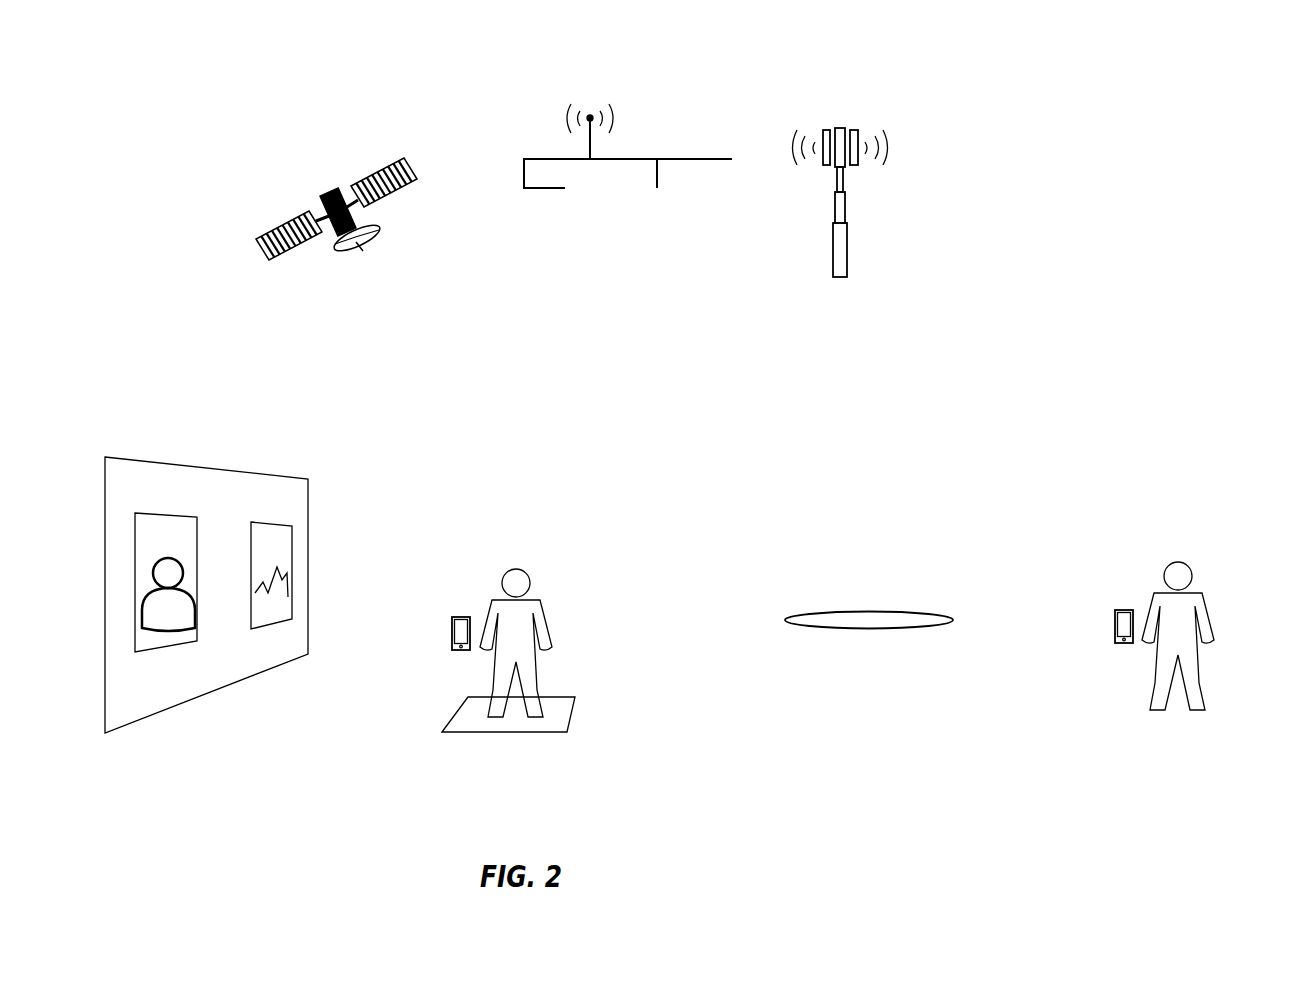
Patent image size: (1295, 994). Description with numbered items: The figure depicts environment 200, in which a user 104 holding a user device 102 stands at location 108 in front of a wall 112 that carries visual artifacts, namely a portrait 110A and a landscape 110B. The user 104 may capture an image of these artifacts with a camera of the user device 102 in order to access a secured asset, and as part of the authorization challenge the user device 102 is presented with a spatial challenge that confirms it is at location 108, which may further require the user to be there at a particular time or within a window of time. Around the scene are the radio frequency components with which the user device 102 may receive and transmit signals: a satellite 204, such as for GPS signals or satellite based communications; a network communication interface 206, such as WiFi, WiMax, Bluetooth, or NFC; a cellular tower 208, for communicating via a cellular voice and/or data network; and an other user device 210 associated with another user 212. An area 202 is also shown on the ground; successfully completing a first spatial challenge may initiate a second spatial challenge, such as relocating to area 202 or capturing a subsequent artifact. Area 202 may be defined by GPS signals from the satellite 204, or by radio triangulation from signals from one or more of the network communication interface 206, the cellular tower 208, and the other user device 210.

The environment 200 is at (1204, 100).
The satellite 204 is at (413, 163).
The network communication interface 206 is at (658, 173).
The cellular tower 208 is at (847, 258).
The wall 112 is at (302, 507).
The portrait 110A is at (172, 515).
The landscape 110B is at (267, 523).
The user 104 is at (537, 608).
The user device 102 is at (452, 640).
The location 108 is at (570, 717).
The area 202 is at (910, 612).
The other user device 210 is at (1123, 610).
The another user 212 is at (1198, 598).